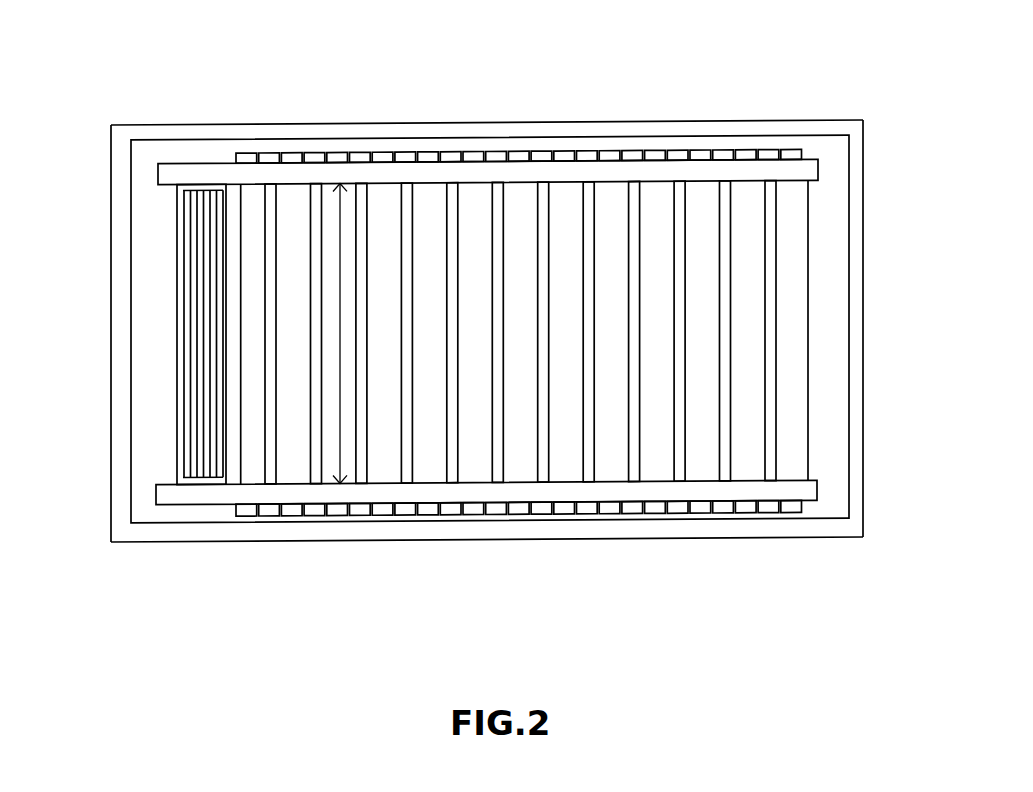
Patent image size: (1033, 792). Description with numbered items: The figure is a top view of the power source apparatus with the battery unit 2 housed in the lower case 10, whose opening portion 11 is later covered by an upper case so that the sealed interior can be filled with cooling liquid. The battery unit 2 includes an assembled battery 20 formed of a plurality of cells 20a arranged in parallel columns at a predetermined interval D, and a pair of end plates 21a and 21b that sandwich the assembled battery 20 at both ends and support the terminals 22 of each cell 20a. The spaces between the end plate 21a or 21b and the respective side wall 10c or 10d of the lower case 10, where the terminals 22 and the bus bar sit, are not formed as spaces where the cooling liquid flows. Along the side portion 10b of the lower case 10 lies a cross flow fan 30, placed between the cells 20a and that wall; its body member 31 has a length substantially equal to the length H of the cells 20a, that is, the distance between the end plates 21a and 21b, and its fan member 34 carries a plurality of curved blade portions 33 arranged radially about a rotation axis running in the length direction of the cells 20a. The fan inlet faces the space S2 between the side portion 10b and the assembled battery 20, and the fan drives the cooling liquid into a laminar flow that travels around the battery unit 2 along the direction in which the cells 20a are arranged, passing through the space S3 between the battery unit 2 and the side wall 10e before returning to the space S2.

The battery unit 2 is at (481, 350).
The lower case 10 is at (505, 349).
The side portion of the lower case 10b is at (118, 455).
The side wall of the lower case 10c is at (545, 533).
The side wall of the lower case 10d is at (516, 138).
The side wall of the lower case 10e is at (858, 321).
The opening portion 11 is at (833, 473).
The assembled battery 20 is at (812, 303).
The cell 20a is at (790, 376).
The end plate 21a is at (177, 494).
The end plate 21b is at (185, 173).
The terminal 22 is at (360, 160).
The cross flow fan 30 is at (130, 334).
The body member 31 is at (180, 346).
The blade portion 33 is at (193, 276).
The fan member 34 is at (185, 238).
The length of the cells H is at (341, 229).
The interval D is at (316, 471).
The space S2 is at (154, 452).
The space S3 is at (823, 244).